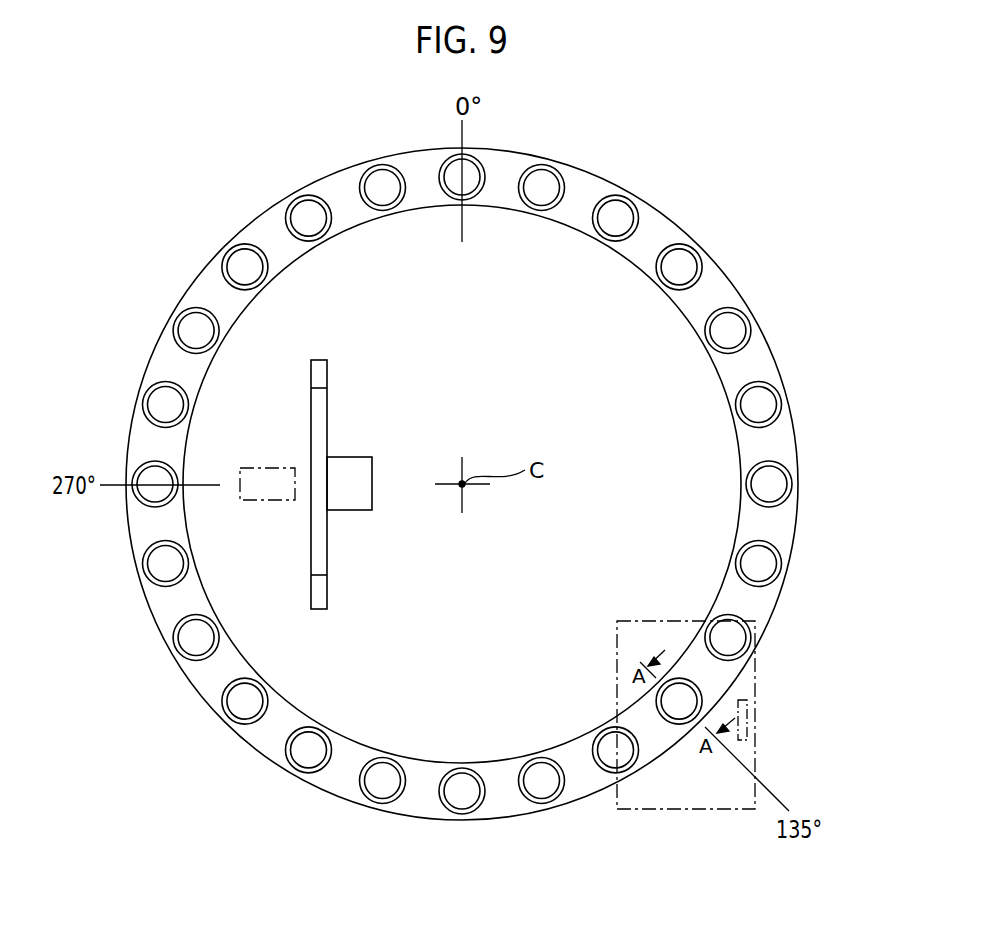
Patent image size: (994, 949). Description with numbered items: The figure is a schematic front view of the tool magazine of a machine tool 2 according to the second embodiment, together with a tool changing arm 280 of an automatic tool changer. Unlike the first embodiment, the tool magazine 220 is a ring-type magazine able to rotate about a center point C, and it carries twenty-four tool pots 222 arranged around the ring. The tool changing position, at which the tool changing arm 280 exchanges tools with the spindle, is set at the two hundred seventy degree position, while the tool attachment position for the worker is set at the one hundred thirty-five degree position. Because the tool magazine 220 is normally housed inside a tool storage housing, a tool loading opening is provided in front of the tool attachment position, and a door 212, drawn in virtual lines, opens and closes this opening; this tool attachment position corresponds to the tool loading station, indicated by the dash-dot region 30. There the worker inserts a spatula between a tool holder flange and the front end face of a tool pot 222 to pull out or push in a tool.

The machine tool 2 is at (454, 488).
The tool magazine 220 is at (273, 748).
The tool pot 222 is at (253, 468).
The tool changing arm 280 is at (318, 430).
The detection region 30 is at (657, 788).
The door 212 is at (710, 802).